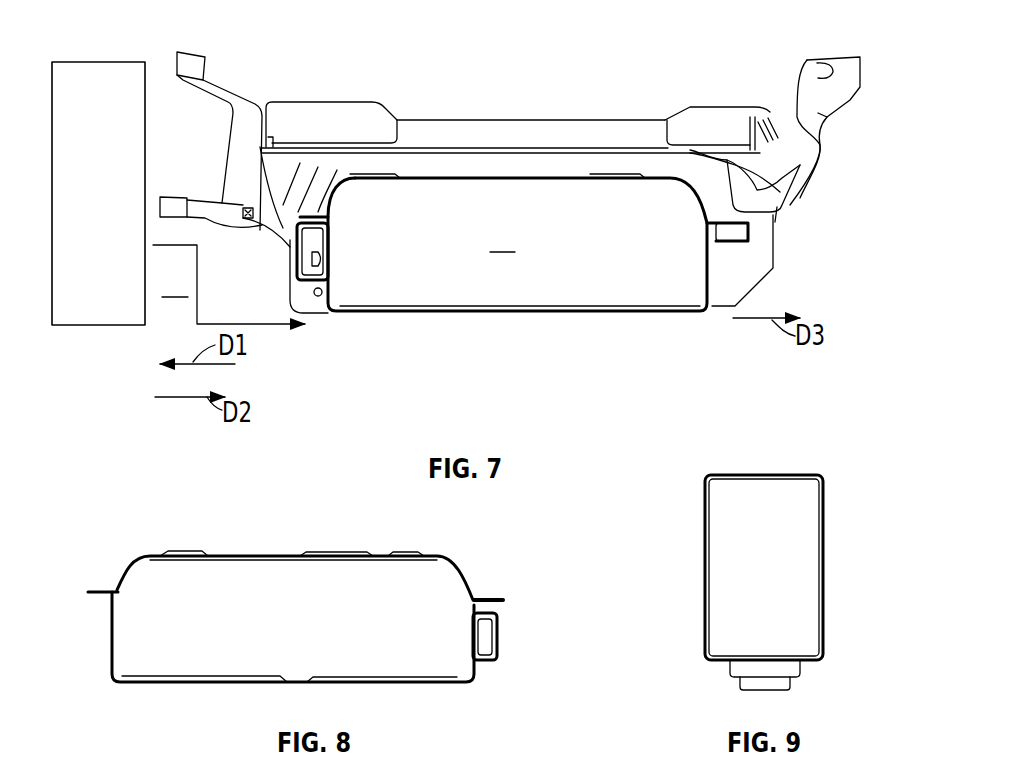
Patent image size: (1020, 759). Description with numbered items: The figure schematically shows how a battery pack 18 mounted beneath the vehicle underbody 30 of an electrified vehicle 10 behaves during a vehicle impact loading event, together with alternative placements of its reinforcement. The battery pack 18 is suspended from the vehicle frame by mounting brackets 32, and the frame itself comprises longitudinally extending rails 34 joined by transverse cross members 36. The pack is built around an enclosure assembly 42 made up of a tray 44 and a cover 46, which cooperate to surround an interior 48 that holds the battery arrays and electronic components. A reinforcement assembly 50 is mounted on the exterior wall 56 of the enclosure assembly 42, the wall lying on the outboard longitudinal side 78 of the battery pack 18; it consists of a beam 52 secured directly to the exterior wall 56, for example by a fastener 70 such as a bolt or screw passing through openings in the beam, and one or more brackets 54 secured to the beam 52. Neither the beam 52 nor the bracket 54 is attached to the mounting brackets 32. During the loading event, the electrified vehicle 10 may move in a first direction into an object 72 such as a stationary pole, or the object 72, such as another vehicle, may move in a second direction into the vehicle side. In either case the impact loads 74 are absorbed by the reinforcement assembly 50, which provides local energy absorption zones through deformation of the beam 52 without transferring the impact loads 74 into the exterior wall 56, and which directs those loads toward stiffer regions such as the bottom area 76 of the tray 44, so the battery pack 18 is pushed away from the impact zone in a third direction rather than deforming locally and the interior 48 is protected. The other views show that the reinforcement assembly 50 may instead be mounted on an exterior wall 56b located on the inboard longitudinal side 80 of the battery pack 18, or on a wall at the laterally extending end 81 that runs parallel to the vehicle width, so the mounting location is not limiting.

In FIG. 7, the electrified vehicle 10 is at (808, 32).
In FIG. 7, the battery pack 18 is at (486, 228).
In FIG. 8, the battery pack 18 is at (452, 536).
In FIG. 9, the battery pack 18 is at (797, 519).
In FIG. 7, the vehicle underbody 30 is at (688, 92).
In FIG. 7, the mounting brackets 32 is at (290, 284).
In FIG. 7, the rails 34 is at (240, 156).
In FIG. 7, the cross members 36 is at (537, 130).
In FIG. 7, the enclosure assembly 42 is at (706, 316).
In FIG. 7, the tray 44 is at (620, 321).
In FIG. 7, the cover 46 is at (594, 166).
In FIG. 7, the interior 48 is at (524, 244).
In FIG. 7, the reinforcement assembly 50 is at (349, 175).
In FIG. 8, the reinforcement assembly 50 is at (505, 620).
In FIG. 9, the reinforcement assembly 50 is at (797, 678).
In FIG. 7, the beam 52 is at (335, 237).
In FIG. 7, the bracket 54 is at (288, 249).
In FIG. 7, the exterior wall 56 is at (327, 293).
In FIG. 8, the exterior wall 56b is at (470, 674).
In FIG. 7, the fastener 70 is at (334, 257).
In FIG. 7, the object 72 is at (100, 72).
In FIG. 7, the impact loads 74 is at (285, 326).
In FIG. 7, the bottom area 76 is at (382, 315).
In FIG. 7, the outboard longitudinal side 78 is at (292, 220).
In FIG. 8, the outboard longitudinal side 78 is at (104, 638).
In FIG. 7, the inboard longitudinal side 80 is at (740, 258).
In FIG. 8, the inboard longitudinal side 80 is at (500, 636).
In FIG. 9, the laterally extending end 81 is at (718, 665).